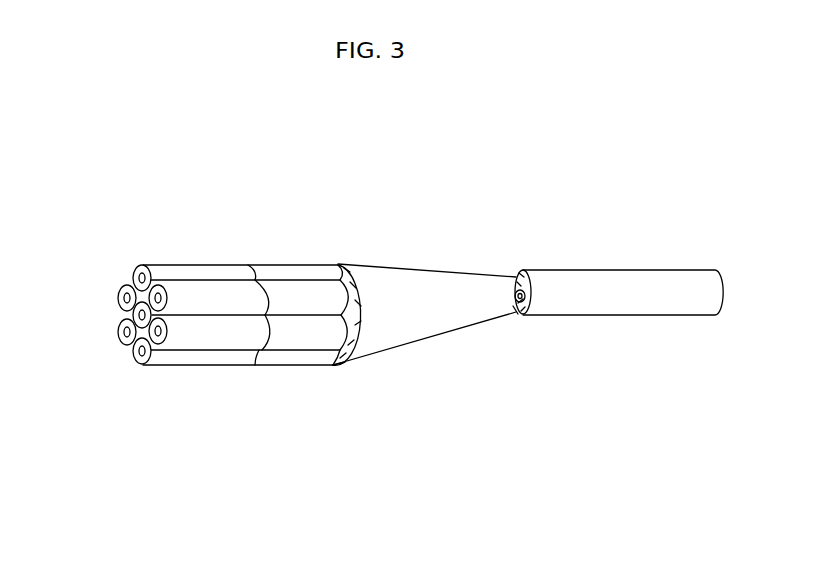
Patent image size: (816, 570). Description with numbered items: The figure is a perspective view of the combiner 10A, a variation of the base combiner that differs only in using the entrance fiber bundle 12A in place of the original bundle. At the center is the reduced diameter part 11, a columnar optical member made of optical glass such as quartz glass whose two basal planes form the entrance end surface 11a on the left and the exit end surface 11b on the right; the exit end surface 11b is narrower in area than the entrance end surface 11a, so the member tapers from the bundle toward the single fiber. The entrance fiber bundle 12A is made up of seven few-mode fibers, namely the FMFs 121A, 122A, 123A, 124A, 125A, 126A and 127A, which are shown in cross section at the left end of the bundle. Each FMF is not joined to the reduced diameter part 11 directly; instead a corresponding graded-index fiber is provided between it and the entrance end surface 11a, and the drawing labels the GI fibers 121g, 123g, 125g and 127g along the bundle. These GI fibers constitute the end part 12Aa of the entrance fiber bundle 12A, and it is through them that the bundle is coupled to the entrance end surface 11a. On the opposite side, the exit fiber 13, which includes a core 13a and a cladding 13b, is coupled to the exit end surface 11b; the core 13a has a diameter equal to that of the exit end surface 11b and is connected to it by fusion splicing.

The combiner 10A is at (412, 156).
The reduced diameter part 11 is at (450, 270).
The entrance end surface 11a is at (331, 367).
The exit end surface 11b is at (516, 314).
The entrance fiber bundle 12A is at (235, 202).
The end part of the entrance fiber bundle 12Aa is at (312, 243).
The exit fiber 13 is at (577, 218).
The core 13a is at (512, 278).
The cladding 13b is at (562, 270).
The FMF 121A is at (140, 266).
The FMF 122A is at (126, 300).
The FMF 123A is at (135, 361).
The FMF 124A is at (124, 290).
The FMF 125A is at (137, 304).
The FMF 126A is at (121, 325).
The FMF 127A is at (128, 344).
The GI fiber 121g is at (278, 272).
The GI fiber 123g is at (317, 358).
The GI fiber 125g is at (283, 291).
The GI fiber 127g is at (294, 332).